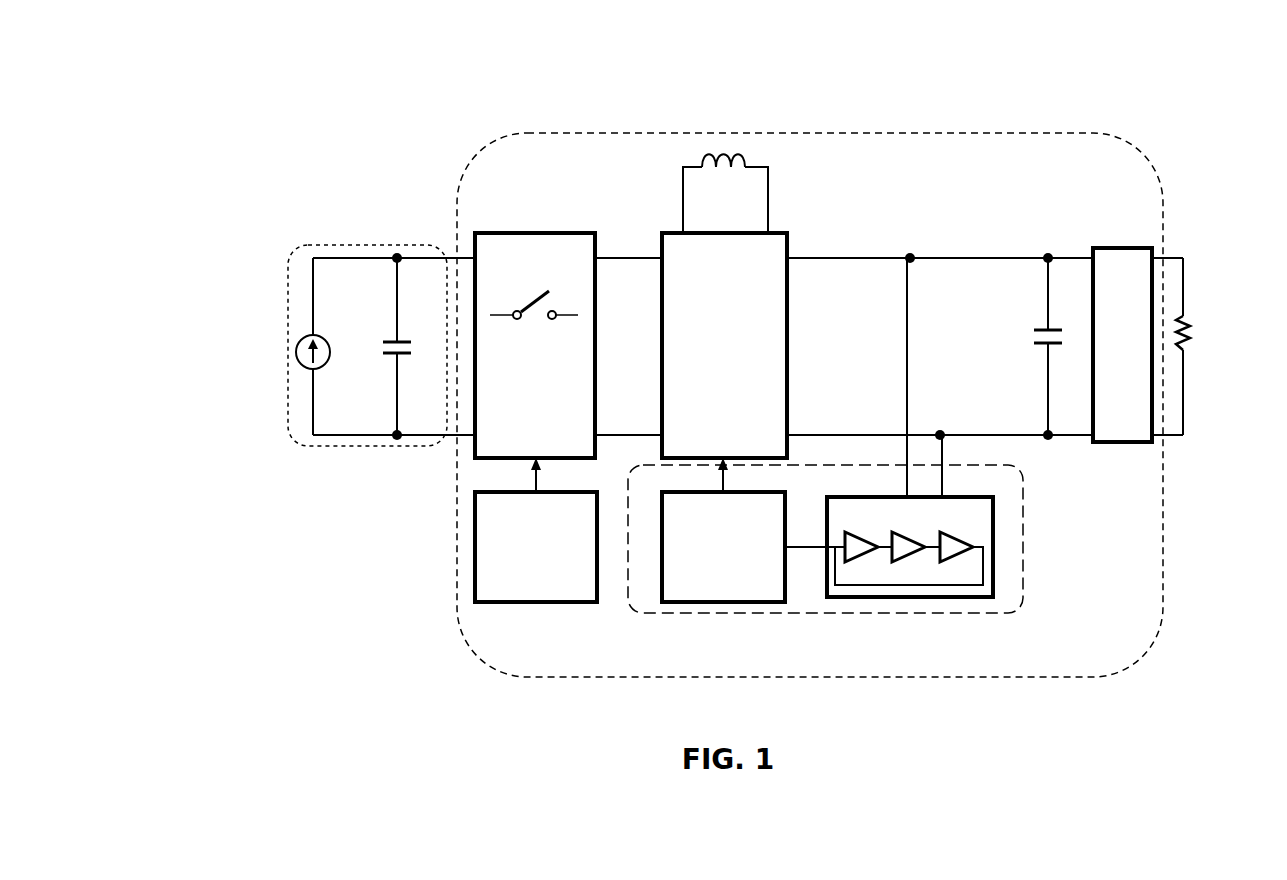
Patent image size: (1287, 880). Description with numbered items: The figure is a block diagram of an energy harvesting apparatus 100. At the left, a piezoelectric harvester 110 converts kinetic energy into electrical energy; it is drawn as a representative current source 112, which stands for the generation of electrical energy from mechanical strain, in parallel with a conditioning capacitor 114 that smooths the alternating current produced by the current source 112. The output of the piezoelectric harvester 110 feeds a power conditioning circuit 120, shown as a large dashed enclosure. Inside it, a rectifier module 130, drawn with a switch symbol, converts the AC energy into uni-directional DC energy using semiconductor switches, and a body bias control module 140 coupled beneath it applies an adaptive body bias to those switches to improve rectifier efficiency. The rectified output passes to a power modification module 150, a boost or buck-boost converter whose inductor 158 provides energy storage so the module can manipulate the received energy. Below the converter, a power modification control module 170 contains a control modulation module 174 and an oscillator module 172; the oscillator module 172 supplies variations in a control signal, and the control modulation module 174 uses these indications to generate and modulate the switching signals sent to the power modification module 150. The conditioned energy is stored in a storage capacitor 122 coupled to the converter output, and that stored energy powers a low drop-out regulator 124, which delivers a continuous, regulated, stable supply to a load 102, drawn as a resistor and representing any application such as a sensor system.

The energy harvesting apparatus 100 is at (423, 110).
The load 102 is at (1183, 314).
The piezoelectric harvester 110 is at (255, 255).
The representative current source 112 is at (297, 361).
The conditioning capacitor 114 is at (392, 358).
The power conditioning circuit 120 is at (858, 125).
The storage capacitor 122 is at (1035, 330).
The low drop-out regulator 124 is at (1130, 248).
The rectifier module 130 is at (515, 233).
The body bias control module 140 is at (475, 575).
The power modification module 150 is at (787, 240).
The inductor 158 is at (745, 156).
The power modification control module 170 is at (828, 615).
The oscillator module 172 is at (920, 597).
The control modulation module 174 is at (662, 593).